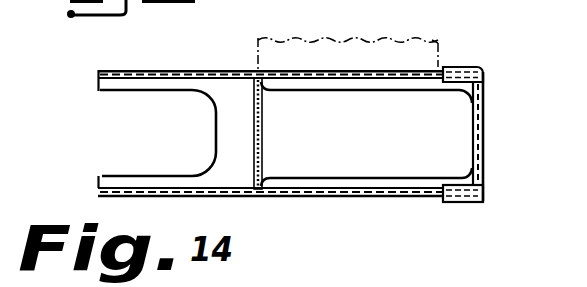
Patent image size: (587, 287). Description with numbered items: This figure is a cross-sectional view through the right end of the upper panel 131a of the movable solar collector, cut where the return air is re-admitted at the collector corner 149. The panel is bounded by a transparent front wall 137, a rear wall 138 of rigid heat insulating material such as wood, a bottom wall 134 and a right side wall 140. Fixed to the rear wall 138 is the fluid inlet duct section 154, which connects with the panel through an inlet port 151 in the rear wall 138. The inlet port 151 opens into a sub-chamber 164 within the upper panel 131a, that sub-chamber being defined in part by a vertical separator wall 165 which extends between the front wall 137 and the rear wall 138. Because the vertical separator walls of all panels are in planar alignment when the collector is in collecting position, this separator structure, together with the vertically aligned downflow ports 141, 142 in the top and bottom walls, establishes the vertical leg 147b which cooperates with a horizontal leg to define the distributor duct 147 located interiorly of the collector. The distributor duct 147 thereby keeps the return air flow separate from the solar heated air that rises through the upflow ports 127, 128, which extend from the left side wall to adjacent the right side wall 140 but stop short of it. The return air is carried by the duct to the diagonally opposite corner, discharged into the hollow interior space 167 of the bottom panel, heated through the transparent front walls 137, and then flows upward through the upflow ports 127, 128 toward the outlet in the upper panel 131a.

The rear wall 138 is at (164, 70).
The upflow port 127 is at (239, 106).
The upflow port 128 is at (146, 92).
The bottom wall 134 is at (229, 148).
The hollow interior space 167 is at (147, 138).
The front wall 137 is at (306, 196).
The vertical leg 147b is at (370, 160).
The distributor duct 147 is at (280, 190).
The vertical separator wall 165 is at (263, 125).
The sub-chamber 164 is at (281, 142).
The right side wall 140 is at (483, 136).
The upper panel 131a is at (487, 108).
The corner 149 is at (478, 62).
The downflow port 141 is at (428, 214).
The downflow port 142 is at (392, 178).
The inlet port 151 is at (356, 77).
The fluid inlet duct section 154 is at (438, 43).